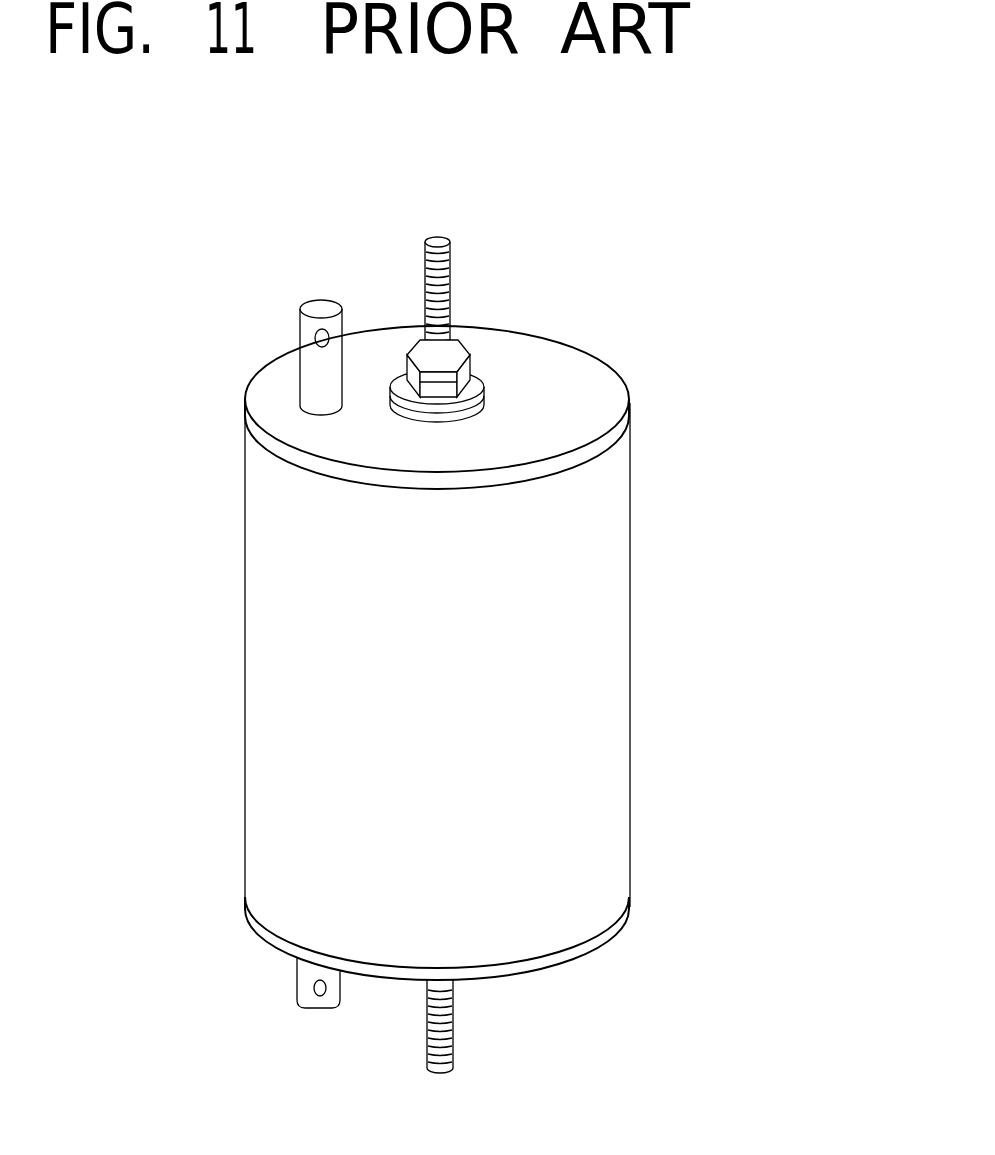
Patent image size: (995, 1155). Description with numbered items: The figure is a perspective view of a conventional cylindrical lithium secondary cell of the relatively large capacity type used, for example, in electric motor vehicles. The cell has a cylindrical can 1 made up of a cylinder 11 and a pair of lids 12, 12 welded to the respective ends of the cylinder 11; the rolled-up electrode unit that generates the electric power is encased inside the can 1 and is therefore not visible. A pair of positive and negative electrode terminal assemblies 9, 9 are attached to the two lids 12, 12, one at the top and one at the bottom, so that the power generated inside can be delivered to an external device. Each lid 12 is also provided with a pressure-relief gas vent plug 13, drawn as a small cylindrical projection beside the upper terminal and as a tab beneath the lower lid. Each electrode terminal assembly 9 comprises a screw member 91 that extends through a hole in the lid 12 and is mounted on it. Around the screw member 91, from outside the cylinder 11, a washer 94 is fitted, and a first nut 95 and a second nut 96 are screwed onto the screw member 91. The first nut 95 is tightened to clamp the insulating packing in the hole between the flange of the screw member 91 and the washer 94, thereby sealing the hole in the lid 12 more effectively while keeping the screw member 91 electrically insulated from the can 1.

The cylindrical can 1 is at (516, 653).
The cylinder 11 is at (613, 625).
The lid 12 is at (609, 398).
The pressure-relief gas vent plug 13 is at (300, 332).
The electrode terminal assembly 9 is at (479, 629).
The screw member 91 is at (447, 265).
The washer 94 is at (396, 378).
The first nut 95 is at (460, 387).
The second nut 96 is at (462, 352).